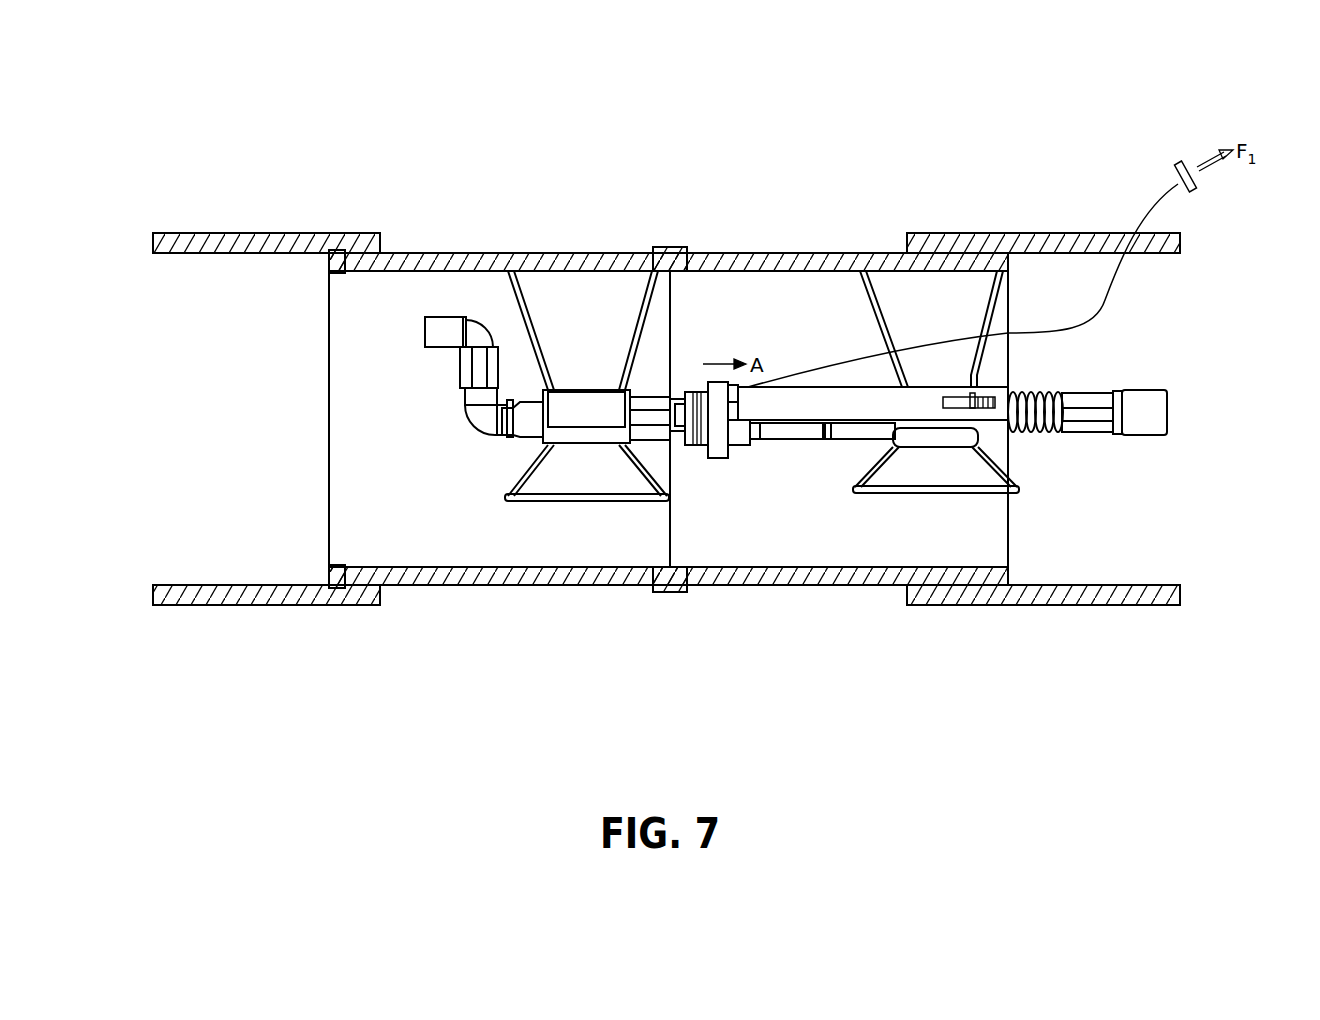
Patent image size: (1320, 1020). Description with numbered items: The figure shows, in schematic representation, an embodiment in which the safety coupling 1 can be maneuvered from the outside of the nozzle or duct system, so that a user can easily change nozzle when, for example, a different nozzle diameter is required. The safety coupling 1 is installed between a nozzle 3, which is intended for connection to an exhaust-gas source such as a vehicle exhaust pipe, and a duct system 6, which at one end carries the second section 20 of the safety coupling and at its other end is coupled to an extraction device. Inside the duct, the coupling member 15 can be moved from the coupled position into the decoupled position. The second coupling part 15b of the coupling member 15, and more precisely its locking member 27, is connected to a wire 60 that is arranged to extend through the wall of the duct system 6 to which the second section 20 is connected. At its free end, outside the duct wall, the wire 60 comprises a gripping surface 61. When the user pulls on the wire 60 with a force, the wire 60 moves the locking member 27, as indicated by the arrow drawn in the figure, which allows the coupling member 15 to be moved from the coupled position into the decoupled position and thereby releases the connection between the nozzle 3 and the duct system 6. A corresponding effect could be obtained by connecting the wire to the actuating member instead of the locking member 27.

The safety coupling 1 is at (503, 174).
The nozzle 3 is at (225, 607).
The duct system 6 is at (960, 233).
The second section 20 is at (752, 253).
The coupling member 15 is at (725, 421).
The second coupling part 15b is at (690, 447).
The locking member 27 is at (722, 453).
The wire 60 is at (835, 360).
The gripping surface 61 is at (1190, 161).